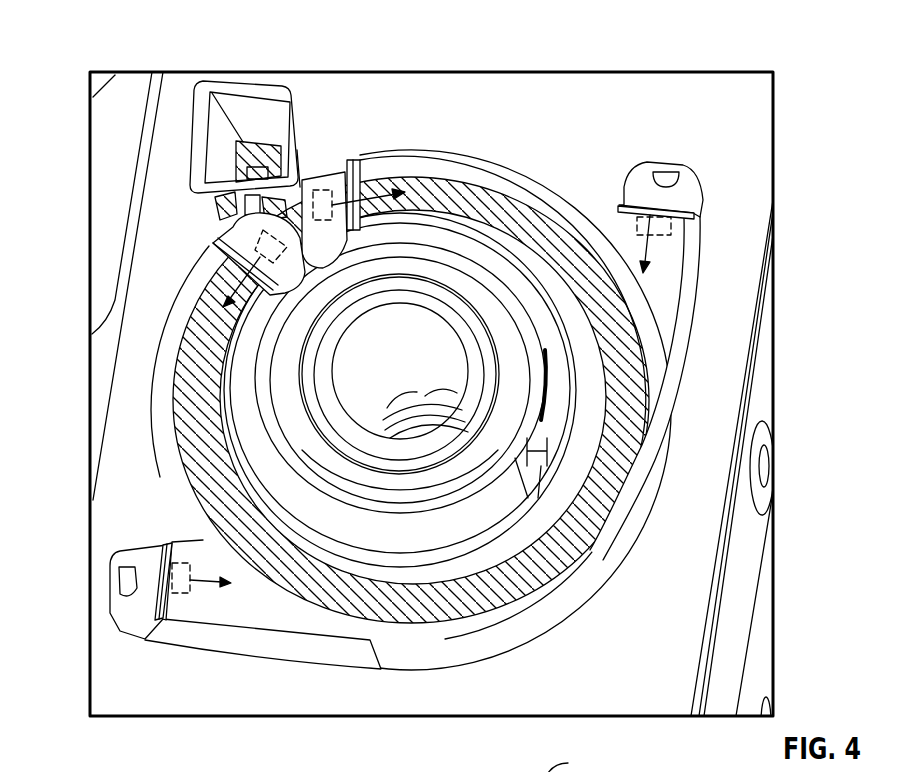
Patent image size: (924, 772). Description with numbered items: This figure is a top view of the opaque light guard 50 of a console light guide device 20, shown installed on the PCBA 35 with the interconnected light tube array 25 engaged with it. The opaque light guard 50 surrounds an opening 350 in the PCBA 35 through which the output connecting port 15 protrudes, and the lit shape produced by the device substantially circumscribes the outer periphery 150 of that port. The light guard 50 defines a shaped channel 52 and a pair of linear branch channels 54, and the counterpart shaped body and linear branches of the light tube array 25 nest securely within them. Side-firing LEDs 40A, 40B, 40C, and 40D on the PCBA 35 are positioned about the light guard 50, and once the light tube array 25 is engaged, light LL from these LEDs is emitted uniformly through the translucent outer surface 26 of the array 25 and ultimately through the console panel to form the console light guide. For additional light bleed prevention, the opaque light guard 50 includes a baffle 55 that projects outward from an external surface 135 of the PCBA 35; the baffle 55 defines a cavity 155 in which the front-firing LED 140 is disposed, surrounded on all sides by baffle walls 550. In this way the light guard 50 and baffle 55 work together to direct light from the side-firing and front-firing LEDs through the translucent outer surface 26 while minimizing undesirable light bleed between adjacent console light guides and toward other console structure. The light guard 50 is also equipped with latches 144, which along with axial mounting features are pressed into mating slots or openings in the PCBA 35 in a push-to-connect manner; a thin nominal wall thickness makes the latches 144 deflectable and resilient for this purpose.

The console light guide device 20 is at (104, 62).
The external surface 135 is at (462, 100).
The PCBA 35 is at (748, 85).
The front-firing LED 140 is at (243, 141).
The cavity 155 is at (250, 117).
The baffle walls 550 is at (247, 117).
The baffle 55 is at (280, 93).
The opaque light guard 50 is at (499, 156).
The translucent outer surface 26 is at (517, 587).
The shaped channel 52 is at (568, 207).
The outer periphery 150 is at (300, 462).
The interconnected light tube array 25 is at (308, 431).
The output connecting port 15 is at (300, 360).
The opening 350 is at (356, 505).
The linear branch channels 54 is at (683, 261).
The side-firing LED 40A is at (175, 600).
The side-firing LED 40B is at (650, 225).
The side-firing LED 40C is at (330, 165).
The side-firing LED 40D is at (263, 230).
The light LL is at (385, 183).
The latches 144 is at (581, 757).